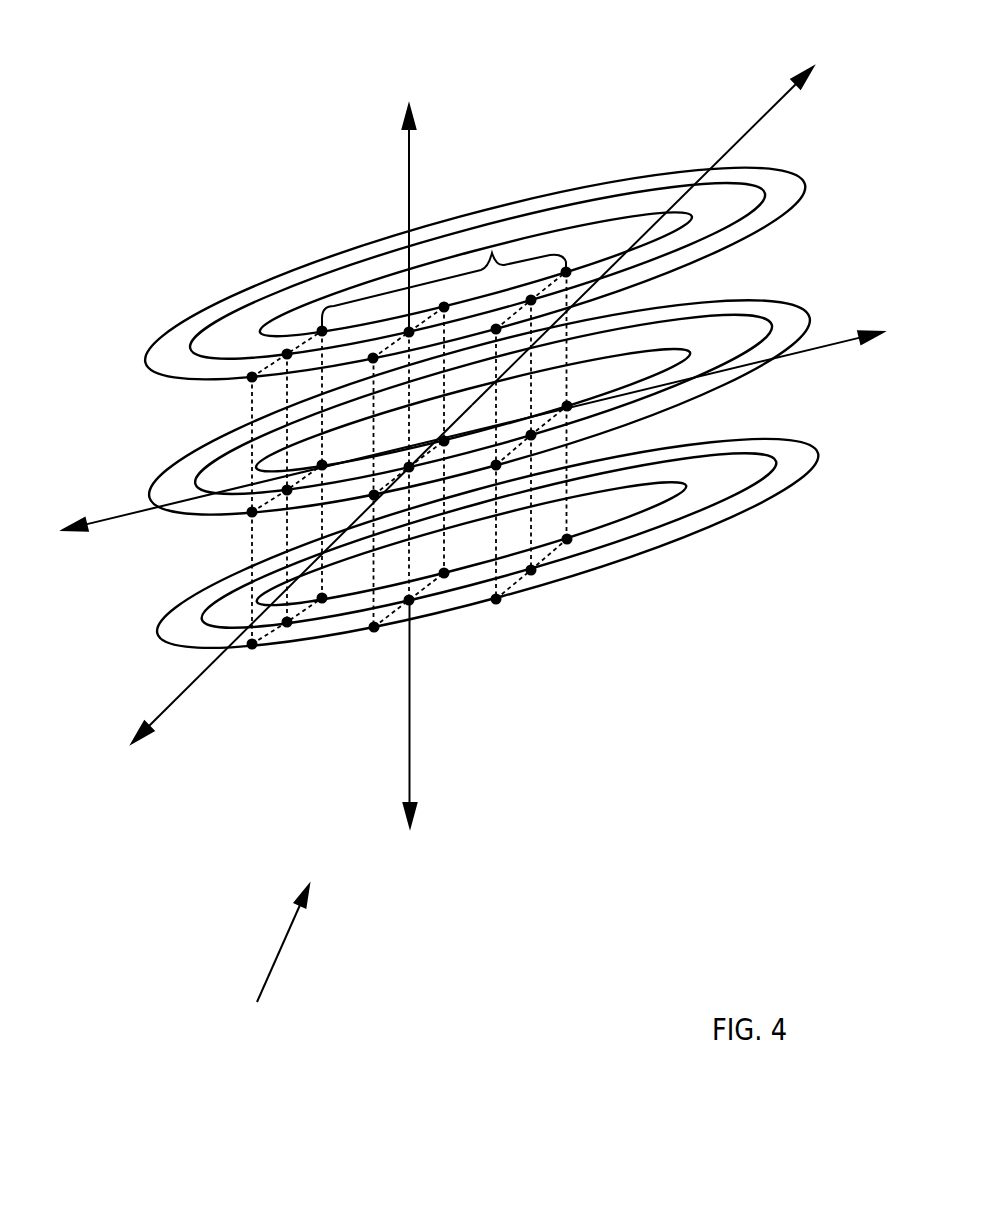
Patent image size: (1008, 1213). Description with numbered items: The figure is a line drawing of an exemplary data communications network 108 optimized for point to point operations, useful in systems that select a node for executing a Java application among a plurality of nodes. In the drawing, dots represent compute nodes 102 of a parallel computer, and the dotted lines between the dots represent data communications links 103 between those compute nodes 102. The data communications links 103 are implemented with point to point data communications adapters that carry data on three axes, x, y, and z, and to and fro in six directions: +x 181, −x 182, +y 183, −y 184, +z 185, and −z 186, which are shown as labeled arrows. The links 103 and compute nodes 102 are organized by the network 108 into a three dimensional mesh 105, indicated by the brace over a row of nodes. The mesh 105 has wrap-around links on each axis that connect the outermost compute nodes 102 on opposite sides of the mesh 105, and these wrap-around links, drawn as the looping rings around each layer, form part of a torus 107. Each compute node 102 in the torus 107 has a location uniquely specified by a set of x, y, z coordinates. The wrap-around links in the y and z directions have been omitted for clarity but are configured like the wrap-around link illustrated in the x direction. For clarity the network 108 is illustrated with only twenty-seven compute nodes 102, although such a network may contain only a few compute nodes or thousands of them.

The compute nodes 102 is at (566, 539).
The data communications links 103 is at (252, 407).
The three dimensional mesh 105 is at (505, 249).
The torus 107 is at (230, 273).
The data communications network 108 is at (290, 1078).
The +x direction 181 is at (920, 362).
The −x direction 182 is at (62, 571).
The +y direction 183 is at (857, 97).
The −y direction 184 is at (127, 794).
The +z direction 185 is at (425, 97).
The −z direction 186 is at (430, 889).